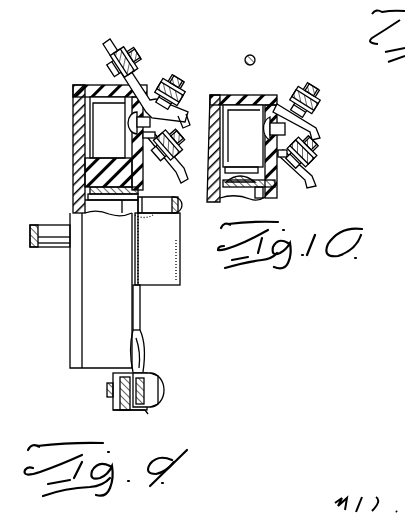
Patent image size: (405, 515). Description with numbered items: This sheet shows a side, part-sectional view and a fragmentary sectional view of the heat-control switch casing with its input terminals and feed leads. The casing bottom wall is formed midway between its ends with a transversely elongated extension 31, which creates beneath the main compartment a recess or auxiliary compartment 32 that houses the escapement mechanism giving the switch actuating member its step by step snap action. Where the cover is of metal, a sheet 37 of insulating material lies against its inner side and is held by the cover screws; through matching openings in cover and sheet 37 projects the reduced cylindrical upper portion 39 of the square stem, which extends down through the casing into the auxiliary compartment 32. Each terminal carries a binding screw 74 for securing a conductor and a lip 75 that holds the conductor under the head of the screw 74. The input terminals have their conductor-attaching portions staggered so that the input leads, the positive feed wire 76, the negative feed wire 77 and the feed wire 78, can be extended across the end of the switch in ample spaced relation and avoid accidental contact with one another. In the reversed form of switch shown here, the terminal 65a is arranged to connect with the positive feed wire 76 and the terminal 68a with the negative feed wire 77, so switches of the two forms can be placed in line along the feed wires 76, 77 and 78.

In FIG. 9, the transversely elongated extension 31 is at (164, 292).
In FIG. 9, the auxiliary compartment 32 is at (140, 210).
In FIG. 9, the sheet of insulating material 37 is at (73, 124).
In FIG. 9, the reduced cylindrical upper portion of the square stem 39 is at (44, 230).
In FIG. 10, the terminal 65a is at (317, 130).
In FIG. 9, the terminal 68a is at (140, 92).
In FIG. 9, the binding screw 74 is at (158, 387).
In FIG. 9, the lip 75 is at (143, 413).
In FIG. 9, the positive feed wire 76 is at (185, 106).
In FIG. 10, the positive feed wire 76 is at (318, 116).
In FIG. 9, the negative feed wire 77 is at (118, 46).
In FIG. 10, the negative feed wire 77 is at (256, 58).
In FIG. 9, the feed wire 78 is at (172, 174).
In FIG. 10, the feed wire 78 is at (313, 176).